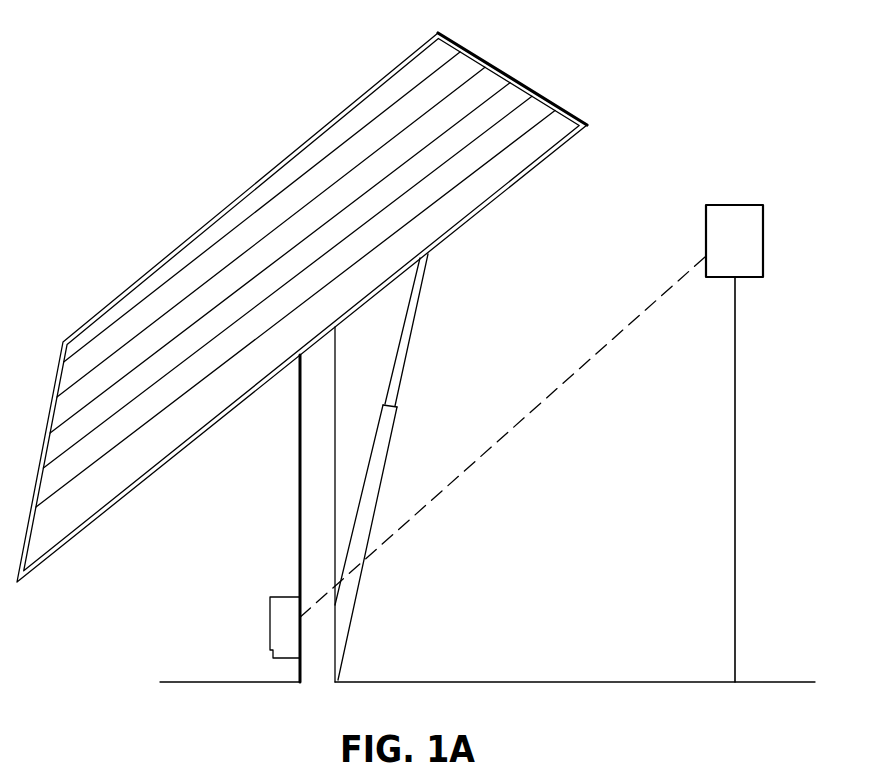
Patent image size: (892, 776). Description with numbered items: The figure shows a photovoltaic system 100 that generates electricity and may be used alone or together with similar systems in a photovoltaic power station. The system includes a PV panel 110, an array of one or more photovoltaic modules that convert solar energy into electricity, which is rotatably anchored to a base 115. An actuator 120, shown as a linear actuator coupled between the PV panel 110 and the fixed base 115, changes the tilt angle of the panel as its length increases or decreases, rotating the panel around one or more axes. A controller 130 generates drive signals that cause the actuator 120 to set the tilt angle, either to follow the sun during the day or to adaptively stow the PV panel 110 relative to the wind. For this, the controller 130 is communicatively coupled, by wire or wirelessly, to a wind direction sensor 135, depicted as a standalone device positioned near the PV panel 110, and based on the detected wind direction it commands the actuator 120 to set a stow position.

The photovoltaic system 100 is at (143, 78).
The PV panel 110 is at (495, 80).
The base 115 is at (300, 558).
The actuator 120 is at (384, 457).
The controller 130 is at (276, 631).
The wind direction sensor 135 is at (714, 249).